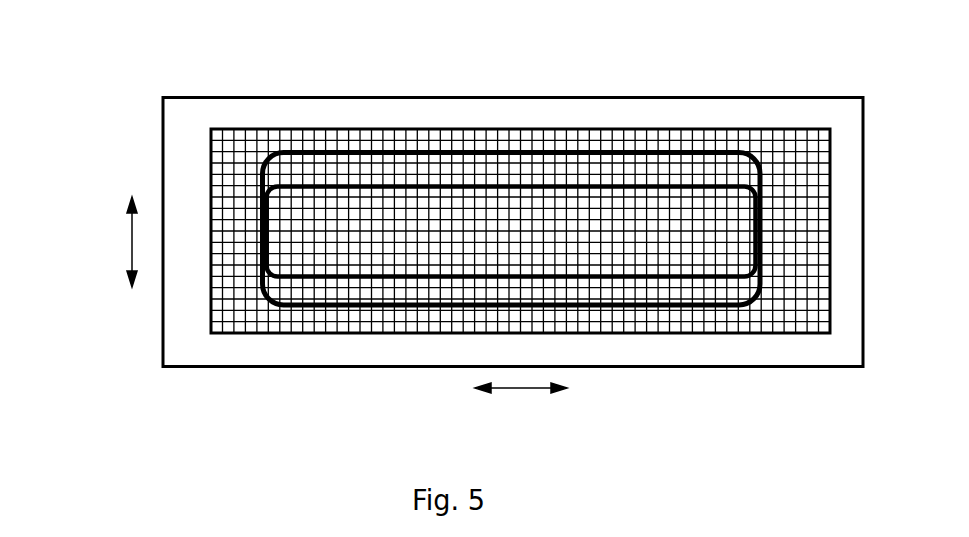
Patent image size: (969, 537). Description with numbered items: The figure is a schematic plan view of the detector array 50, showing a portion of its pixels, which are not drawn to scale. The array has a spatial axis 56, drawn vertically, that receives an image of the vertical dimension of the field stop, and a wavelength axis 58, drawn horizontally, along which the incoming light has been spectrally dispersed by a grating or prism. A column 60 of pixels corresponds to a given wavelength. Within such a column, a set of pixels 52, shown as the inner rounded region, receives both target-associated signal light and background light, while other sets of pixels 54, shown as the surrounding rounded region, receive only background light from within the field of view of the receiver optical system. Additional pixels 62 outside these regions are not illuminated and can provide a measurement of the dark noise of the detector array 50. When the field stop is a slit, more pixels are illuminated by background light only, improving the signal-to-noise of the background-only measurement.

The detector array 50 is at (245, 128).
The set of pixels 52 is at (658, 245).
The other sets of pixels 54 is at (658, 170).
The spatial axis 56 is at (90, 218).
The wavelength axis 58 is at (528, 409).
The column of pixels 60 is at (658, 118).
The additional pixels 62 is at (795, 278).